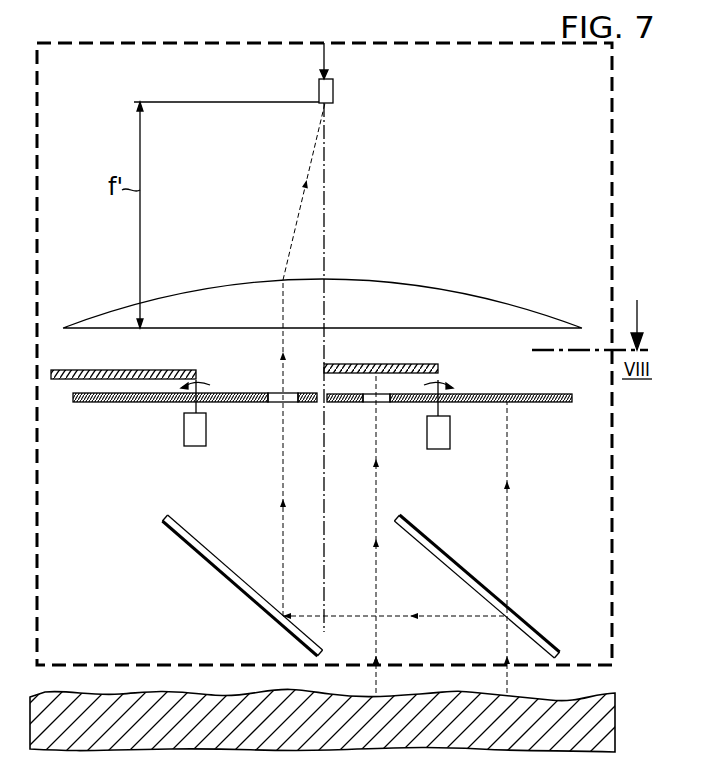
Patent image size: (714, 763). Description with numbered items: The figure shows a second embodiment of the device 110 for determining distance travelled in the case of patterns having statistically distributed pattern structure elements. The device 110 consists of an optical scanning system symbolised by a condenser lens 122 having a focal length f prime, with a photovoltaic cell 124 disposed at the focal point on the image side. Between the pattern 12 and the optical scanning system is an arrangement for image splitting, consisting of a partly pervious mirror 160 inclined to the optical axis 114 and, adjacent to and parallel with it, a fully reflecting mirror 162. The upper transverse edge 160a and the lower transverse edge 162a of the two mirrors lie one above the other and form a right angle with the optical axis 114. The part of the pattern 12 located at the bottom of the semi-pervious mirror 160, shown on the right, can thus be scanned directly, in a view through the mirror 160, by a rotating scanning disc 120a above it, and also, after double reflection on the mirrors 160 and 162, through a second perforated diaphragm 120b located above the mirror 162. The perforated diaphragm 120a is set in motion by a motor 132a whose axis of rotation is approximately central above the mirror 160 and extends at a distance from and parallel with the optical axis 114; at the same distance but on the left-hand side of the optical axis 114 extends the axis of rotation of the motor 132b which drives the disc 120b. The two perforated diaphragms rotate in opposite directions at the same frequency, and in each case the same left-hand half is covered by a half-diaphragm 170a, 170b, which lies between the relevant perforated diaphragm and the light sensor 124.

The pattern 12 is at (572, 691).
The device 110 is at (636, 134).
The optical axis 114 is at (326, 230).
The condenser lens 122 is at (450, 303).
The photovoltaic cell 124 is at (333, 88).
The rotating scanning disc 120a is at (555, 403).
The perforated diaphragm 120b is at (112, 402).
The half-diaphragm 170a is at (427, 363).
The half-diaphragm 170b is at (73, 370).
The motor 132a is at (447, 440).
The motor 132b is at (206, 436).
The partly pervious mirror 160 is at (450, 562).
The upper transverse edge 160a is at (399, 514).
The fully reflecting mirror 162 is at (228, 571).
The lower transverse edge 162a is at (318, 656).